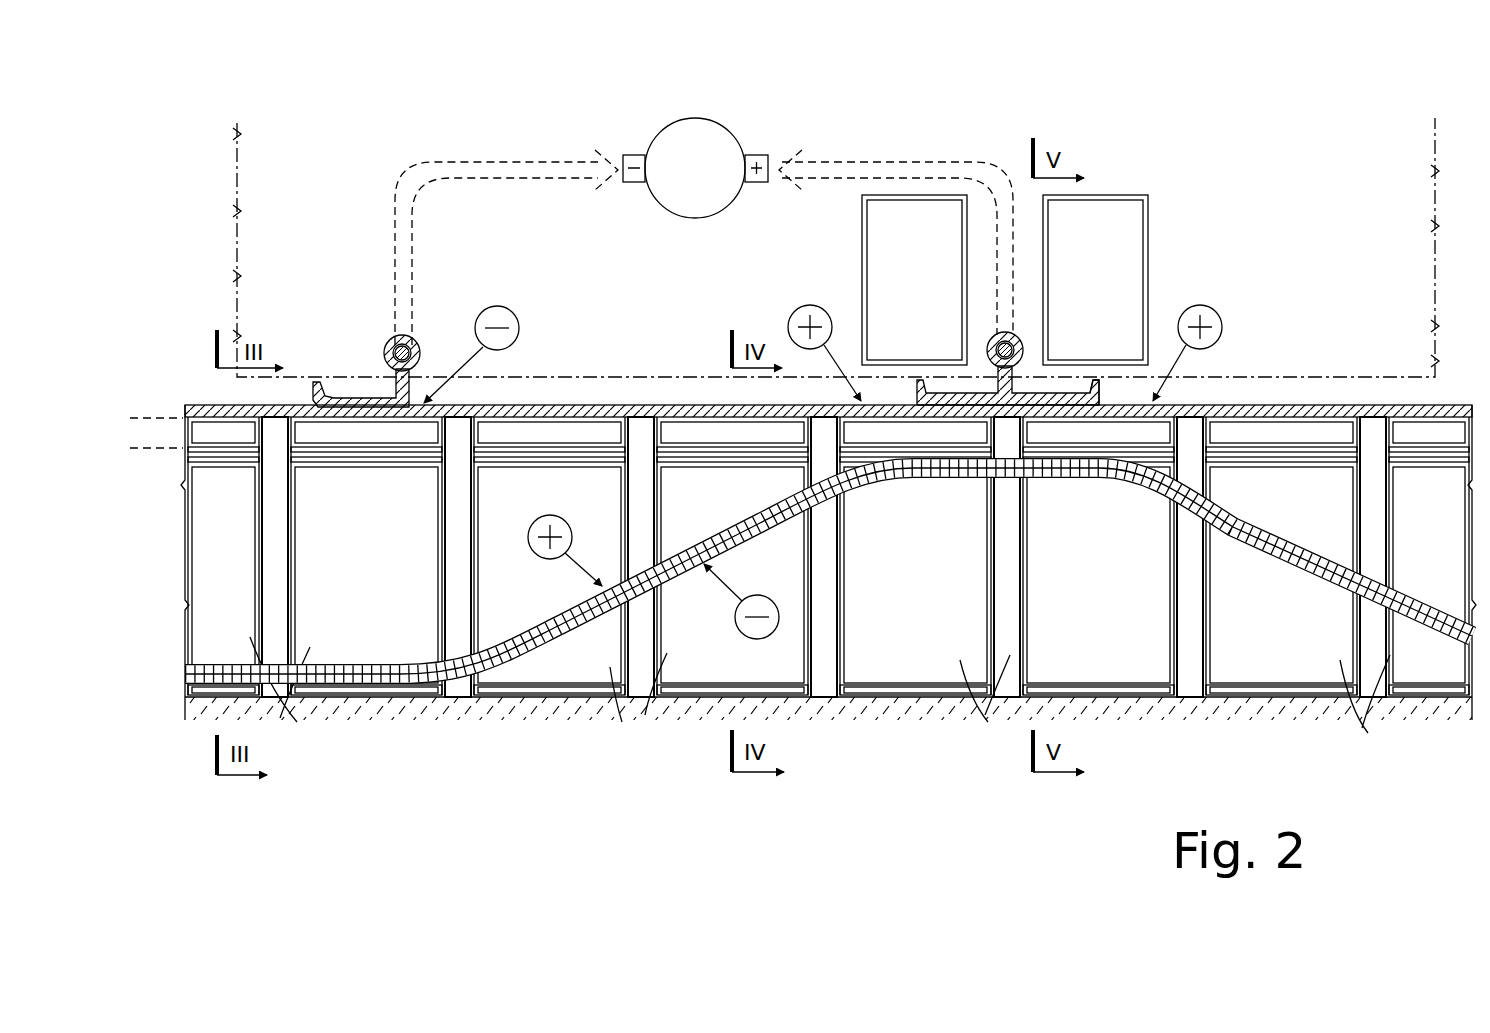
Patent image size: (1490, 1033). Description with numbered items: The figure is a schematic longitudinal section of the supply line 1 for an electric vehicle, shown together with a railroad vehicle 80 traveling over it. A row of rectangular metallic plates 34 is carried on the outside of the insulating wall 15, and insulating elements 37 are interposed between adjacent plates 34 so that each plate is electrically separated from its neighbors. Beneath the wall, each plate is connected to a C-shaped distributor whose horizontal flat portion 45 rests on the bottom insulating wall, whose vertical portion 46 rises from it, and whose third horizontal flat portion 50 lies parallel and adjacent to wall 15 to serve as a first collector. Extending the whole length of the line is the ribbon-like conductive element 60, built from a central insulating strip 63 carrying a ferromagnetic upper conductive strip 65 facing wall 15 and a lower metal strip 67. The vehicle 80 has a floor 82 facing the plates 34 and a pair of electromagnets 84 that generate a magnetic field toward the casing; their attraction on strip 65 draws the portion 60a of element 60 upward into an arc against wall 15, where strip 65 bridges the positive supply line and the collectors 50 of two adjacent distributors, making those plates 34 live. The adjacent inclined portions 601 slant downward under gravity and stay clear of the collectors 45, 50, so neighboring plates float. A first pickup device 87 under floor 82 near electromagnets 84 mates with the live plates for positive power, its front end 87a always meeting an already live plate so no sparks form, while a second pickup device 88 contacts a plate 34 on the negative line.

The supply line 1 is at (589, 326).
The wall 15 is at (157, 408).
The rectangular metallic plate 34 is at (1437, 416).
The insulating element 37 is at (1373, 422).
The first horizontal flat portion 45 is at (1420, 690).
The second vertical portion 46 is at (820, 700).
The third horizontal flat portion 50 is at (1420, 455).
The ribbon-like conductive element 60 is at (416, 621).
The portion of ribbon-like conductive element 60a is at (981, 492).
The inclined portions 601 is at (687, 585).
The central insulating strip 63 is at (573, 616).
The upper conductive strip 65 is at (567, 620).
The metal strip 67 is at (597, 634).
The railroad vehicle 80 is at (228, 232).
The floor 82 is at (290, 381).
The electromagnets 84 is at (885, 263).
The first pickup device 87 is at (1048, 397).
The front end 87a is at (1108, 418).
The second pickup device 88 is at (357, 400).